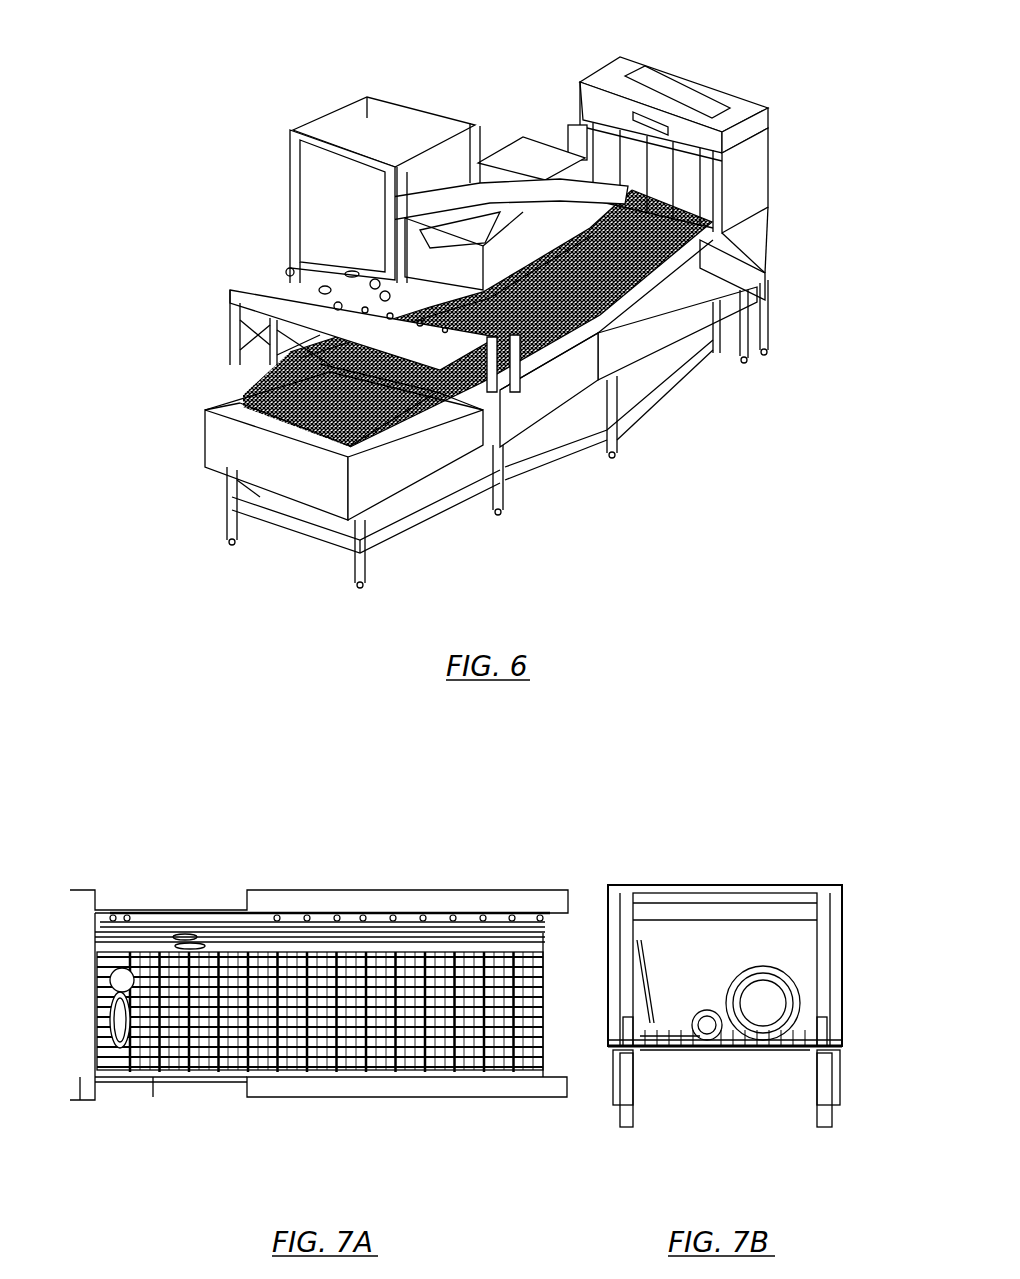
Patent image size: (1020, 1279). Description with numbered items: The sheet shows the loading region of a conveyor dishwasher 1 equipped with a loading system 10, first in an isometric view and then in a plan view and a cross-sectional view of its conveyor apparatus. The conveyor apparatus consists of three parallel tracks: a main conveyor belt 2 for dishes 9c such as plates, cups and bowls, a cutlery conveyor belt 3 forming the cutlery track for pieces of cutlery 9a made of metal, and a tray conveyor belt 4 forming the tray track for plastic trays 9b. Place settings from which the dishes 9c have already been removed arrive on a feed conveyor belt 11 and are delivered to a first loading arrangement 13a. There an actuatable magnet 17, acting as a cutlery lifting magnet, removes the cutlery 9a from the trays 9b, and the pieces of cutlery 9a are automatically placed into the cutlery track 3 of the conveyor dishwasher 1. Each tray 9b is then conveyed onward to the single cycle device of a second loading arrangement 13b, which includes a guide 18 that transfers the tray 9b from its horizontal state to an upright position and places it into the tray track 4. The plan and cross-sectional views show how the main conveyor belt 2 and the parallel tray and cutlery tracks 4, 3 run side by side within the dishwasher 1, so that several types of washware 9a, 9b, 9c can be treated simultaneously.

In FIG. 6, the loading system 10 is at (146, 112).
In FIG. 6, the conveyor dishwasher 1 is at (753, 193).
In FIG. 7A, the conveyor dishwasher 1 is at (523, 907).
In FIG. 7B, the conveyor dishwasher 1 is at (737, 900).
In FIG. 6, the main conveyor belt 2 is at (305, 400).
In FIG. 7A, the main conveyor belt 2 is at (85, 960).
In FIG. 7B, the main conveyor belt 2 is at (743, 1048).
In FIG. 7A, the cutlery conveyor belt 3 is at (378, 937).
In FIG. 7B, the cutlery conveyor belt 3 is at (670, 1047).
In FIG. 7A, the tray conveyor belt 4 is at (328, 913).
In FIG. 7B, the tray conveyor belt 4 is at (645, 1047).
In FIG. 7A, the cutlery 9a is at (173, 940).
In FIG. 7A, the trays 9b is at (227, 913).
In FIG. 7B, the trays 9b is at (643, 1023).
In FIG. 7A, the dishes 9c is at (123, 973).
In FIG. 7B, the dishes 9c is at (783, 1007).
In FIG. 6, the feed conveyor belt 11 is at (415, 322).
In FIG. 6, the first loading arrangement 13a is at (366, 76).
In FIG. 6, the second loading arrangement 13b is at (516, 43).
In FIG. 6, the actuatable magnet 17 is at (423, 205).
In FIG. 6, the guide 18 is at (538, 202).